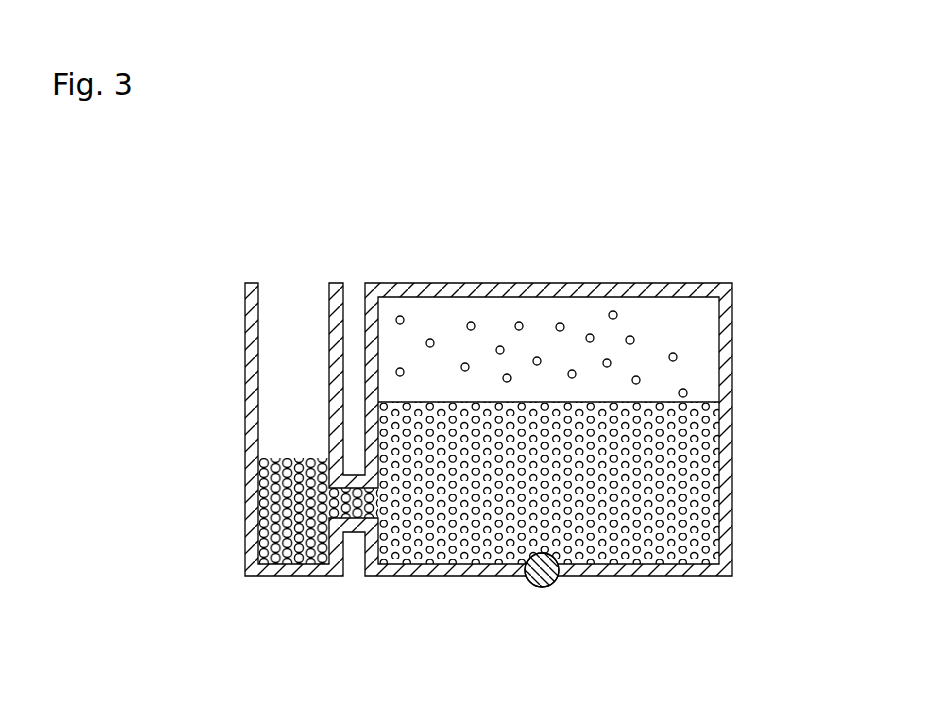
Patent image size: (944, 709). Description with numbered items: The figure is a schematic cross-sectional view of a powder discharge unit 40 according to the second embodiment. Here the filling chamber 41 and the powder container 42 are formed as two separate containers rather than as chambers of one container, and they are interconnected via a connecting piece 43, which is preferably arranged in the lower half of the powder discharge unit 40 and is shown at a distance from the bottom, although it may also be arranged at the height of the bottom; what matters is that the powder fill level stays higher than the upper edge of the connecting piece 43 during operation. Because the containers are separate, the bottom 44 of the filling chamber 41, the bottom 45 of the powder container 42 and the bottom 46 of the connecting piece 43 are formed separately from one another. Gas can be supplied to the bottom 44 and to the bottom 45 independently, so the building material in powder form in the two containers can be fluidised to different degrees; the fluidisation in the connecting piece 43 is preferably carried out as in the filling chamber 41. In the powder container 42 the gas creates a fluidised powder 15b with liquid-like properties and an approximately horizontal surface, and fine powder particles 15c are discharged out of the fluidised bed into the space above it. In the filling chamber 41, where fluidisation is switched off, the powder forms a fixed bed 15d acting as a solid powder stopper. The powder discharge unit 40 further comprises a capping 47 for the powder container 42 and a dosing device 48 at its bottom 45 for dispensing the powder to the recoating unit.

The powder discharge unit 40 is at (476, 286).
The filling chamber 41 is at (280, 288).
The powder container 42 is at (411, 292).
The connecting piece 43 is at (372, 510).
The bottom of the filling chamber 44 is at (300, 570).
The bottom of the powder container 45 is at (672, 572).
The bottom of the connecting piece 46 is at (347, 522).
The capping 47 is at (527, 288).
The dosing device 48 is at (543, 584).
The fluidised powder 15b is at (685, 485).
The fine powder particles 15c is at (677, 359).
The fixed bed 15d is at (260, 463).